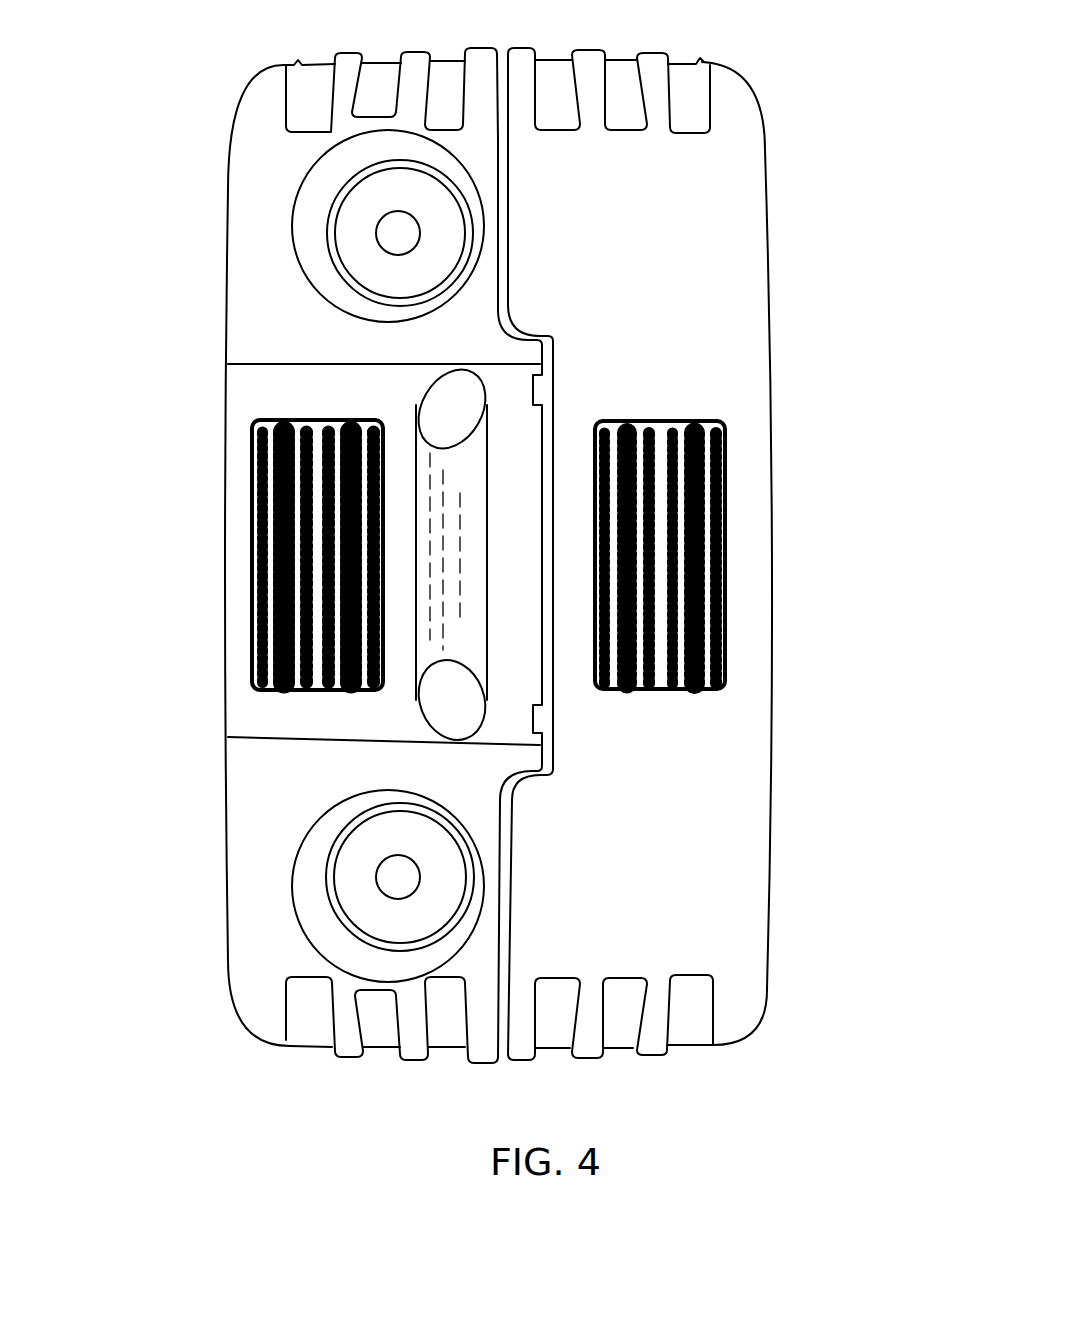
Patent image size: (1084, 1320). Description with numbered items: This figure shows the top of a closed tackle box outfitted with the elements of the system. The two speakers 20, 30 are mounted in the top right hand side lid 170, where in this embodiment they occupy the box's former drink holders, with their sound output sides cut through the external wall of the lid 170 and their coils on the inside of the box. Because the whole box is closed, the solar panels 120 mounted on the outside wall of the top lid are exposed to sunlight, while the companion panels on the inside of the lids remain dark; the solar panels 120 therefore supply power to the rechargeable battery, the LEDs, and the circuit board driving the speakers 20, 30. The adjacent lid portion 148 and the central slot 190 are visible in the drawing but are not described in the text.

The speaker 20 is at (376, 233).
The speaker 30 is at (377, 877).
The solar panel pair 120 is at (248, 557).
The housing cover 148 is at (726, 888).
The top right hand side lid 170 is at (265, 773).
The slot 190 is at (442, 420).